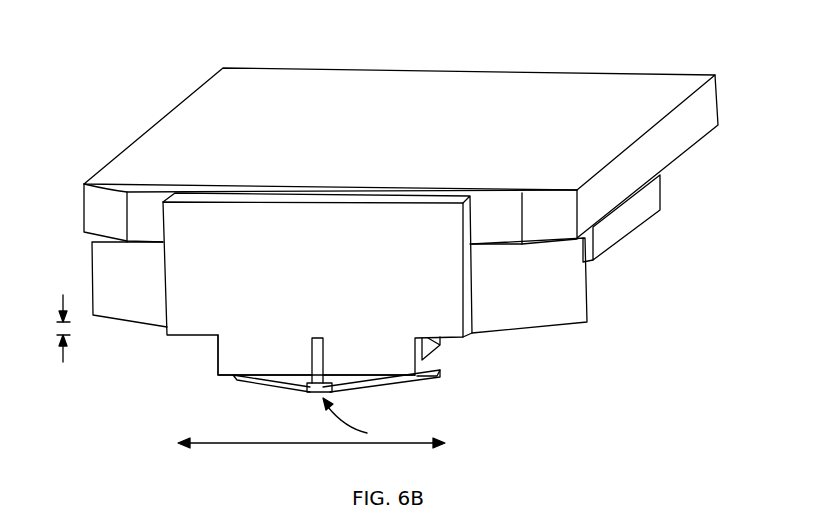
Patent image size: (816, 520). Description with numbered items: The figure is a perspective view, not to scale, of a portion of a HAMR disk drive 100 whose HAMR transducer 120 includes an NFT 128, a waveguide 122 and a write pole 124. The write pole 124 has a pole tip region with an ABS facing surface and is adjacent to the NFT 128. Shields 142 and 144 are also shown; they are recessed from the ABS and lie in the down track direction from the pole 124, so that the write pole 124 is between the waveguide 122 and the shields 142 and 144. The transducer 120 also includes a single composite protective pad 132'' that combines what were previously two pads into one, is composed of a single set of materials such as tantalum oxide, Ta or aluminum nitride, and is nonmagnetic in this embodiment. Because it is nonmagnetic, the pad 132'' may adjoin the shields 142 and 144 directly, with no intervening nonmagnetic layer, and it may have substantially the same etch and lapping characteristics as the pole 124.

The HAMR disk drive 100 is at (331, 41).
The HAMR transducer 120 is at (317, 284).
The shield 144 is at (642, 74).
The shield 142 is at (92, 278).
The single composite protective pad 132'' is at (268, 366).
The waveguide 122 is at (243, 380).
The write pole 124 is at (323, 358).
The NFT 128 is at (317, 392).